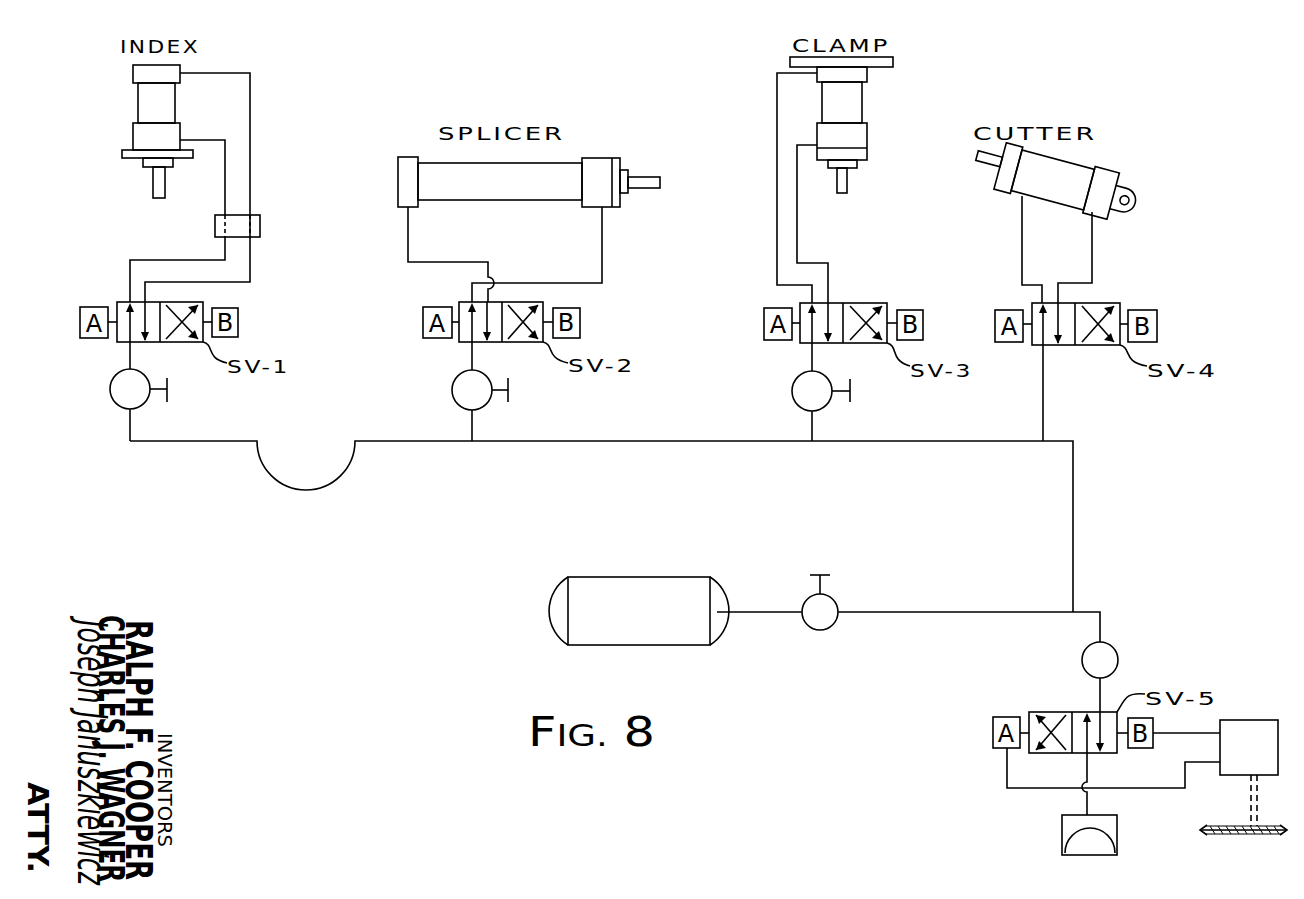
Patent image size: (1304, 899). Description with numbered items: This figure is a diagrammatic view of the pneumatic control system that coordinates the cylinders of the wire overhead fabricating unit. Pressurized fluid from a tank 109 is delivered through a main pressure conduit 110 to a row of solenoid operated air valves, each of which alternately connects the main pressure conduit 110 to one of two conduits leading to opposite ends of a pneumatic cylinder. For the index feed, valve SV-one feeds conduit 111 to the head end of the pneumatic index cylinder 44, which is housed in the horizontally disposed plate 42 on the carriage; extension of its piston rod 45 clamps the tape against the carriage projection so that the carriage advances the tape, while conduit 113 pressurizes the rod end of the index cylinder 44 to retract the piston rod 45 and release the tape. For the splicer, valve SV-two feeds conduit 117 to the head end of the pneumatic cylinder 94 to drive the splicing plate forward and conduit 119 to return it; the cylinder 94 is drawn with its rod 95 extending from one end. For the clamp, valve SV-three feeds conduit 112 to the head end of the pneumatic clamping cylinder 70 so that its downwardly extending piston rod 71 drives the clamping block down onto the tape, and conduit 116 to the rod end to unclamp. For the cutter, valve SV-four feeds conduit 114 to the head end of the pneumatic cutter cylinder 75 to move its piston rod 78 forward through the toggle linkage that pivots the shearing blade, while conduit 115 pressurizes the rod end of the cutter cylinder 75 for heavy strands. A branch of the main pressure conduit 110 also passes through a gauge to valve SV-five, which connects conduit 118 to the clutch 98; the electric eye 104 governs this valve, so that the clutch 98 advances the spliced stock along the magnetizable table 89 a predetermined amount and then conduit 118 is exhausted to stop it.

The pneumatic index cylinder 44 is at (143, 93).
The horizontally disposed plate 42 is at (131, 153).
The piston rod 45 is at (153, 185).
The conduit 113 is at (225, 197).
The conduit 111 is at (250, 100).
The pneumatic cylinder 94 is at (495, 187).
The splicer piston rod 95 is at (647, 177).
The conduit 117 is at (408, 228).
The conduit 119 is at (602, 245).
The pneumatic clamping cylinder 70 is at (852, 103).
The piston rod 71 is at (847, 178).
The conduit 112 is at (777, 203).
The conduit 116 is at (797, 222).
The pneumatic cutter cylinder 75 is at (1083, 198).
The piston rod 78 is at (1000, 165).
The conduit 115 is at (1022, 245).
The conduit 114 is at (1092, 250).
The main pressure conduit 110 is at (1073, 478).
The tank 109 is at (670, 623).
The electric eye 104 is at (1225, 720).
The conduit 118 is at (1087, 775).
The clutch 98 is at (1062, 830).
The table 89 is at (1240, 835).